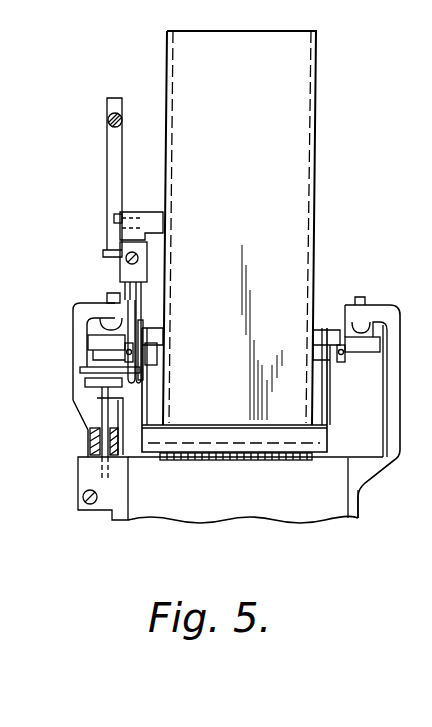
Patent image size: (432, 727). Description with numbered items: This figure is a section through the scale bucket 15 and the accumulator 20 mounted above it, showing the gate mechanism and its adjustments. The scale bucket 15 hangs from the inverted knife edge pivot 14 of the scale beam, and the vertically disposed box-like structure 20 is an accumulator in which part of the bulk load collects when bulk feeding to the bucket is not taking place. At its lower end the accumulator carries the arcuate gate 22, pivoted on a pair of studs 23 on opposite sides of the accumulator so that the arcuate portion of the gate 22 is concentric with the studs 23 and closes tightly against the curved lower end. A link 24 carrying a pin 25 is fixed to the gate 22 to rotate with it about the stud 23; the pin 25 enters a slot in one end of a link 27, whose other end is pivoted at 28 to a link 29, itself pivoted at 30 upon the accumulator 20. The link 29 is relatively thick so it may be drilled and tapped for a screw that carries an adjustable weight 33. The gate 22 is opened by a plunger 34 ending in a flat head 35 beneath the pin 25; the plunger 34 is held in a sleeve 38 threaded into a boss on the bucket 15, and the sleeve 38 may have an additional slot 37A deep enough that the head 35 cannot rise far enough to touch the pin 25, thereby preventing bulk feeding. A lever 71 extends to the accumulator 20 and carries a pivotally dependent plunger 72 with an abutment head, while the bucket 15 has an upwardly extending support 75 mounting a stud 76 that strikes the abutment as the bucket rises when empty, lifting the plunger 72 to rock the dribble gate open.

The inverted knife edge pivot 14 is at (348, 343).
The scale bucket 15 is at (288, 508).
The box-like structure 20 is at (305, 228).
The arcuate gate 22 is at (322, 447).
The studs 23 is at (342, 363).
The link 24 is at (150, 353).
The pin 25 is at (80, 370).
The link 27 is at (140, 310).
The pivot 28 is at (140, 290).
The link 29 is at (130, 237).
The pivot 30 is at (114, 218).
The weight 33 is at (120, 270).
The plunger 34 is at (102, 412).
The flat head 35 is at (88, 398).
The additional slot 37A is at (95, 459).
The sleeve 38 is at (92, 440).
The lever 71 is at (108, 124).
The plunger 72 is at (107, 178).
The support 75 is at (378, 312).
The stud 76 is at (369, 282).